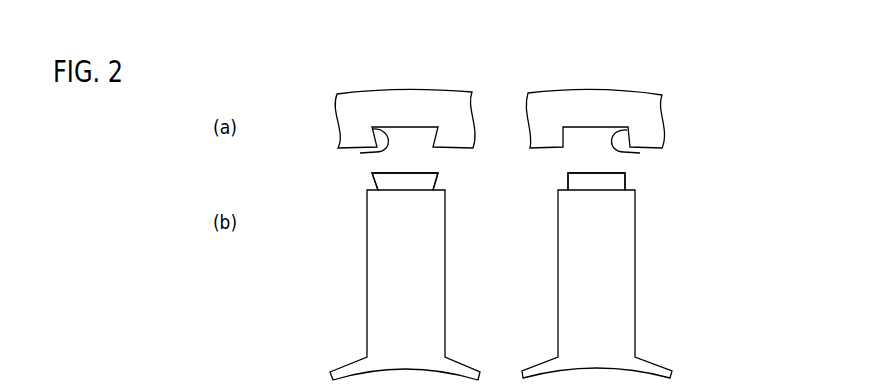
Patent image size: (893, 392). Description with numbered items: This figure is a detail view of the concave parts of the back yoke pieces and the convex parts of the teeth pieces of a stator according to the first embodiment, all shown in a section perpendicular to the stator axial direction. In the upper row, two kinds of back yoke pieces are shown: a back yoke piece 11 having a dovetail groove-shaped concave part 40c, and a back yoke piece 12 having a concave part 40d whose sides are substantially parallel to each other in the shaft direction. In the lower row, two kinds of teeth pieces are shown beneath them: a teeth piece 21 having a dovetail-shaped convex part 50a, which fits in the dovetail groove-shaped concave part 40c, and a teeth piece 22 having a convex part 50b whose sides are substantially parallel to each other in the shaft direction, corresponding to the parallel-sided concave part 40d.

The back yoke piece 11 is at (355, 94).
The back yoke piece 12 is at (653, 95).
The concave part 40c is at (360, 153).
The concave part 40d is at (640, 153).
The teeth piece 21 is at (367, 275).
The teeth piece 22 is at (635, 268).
The convex part 50a is at (372, 177).
The convex part 50b is at (627, 180).